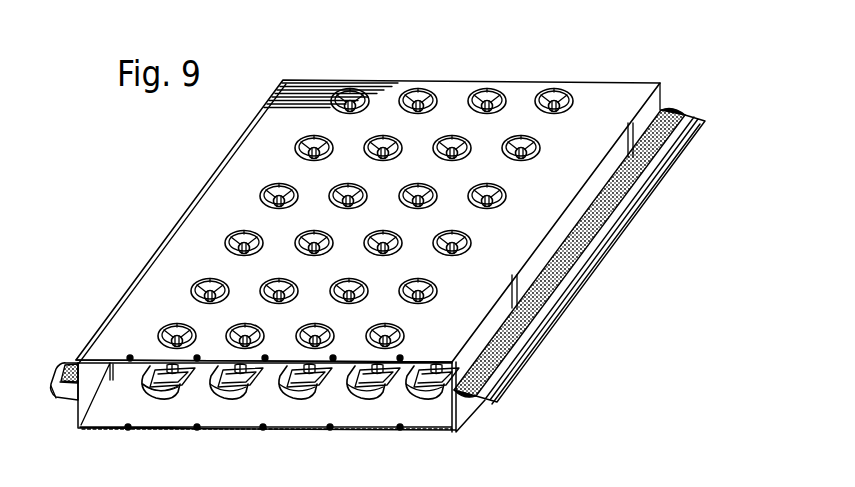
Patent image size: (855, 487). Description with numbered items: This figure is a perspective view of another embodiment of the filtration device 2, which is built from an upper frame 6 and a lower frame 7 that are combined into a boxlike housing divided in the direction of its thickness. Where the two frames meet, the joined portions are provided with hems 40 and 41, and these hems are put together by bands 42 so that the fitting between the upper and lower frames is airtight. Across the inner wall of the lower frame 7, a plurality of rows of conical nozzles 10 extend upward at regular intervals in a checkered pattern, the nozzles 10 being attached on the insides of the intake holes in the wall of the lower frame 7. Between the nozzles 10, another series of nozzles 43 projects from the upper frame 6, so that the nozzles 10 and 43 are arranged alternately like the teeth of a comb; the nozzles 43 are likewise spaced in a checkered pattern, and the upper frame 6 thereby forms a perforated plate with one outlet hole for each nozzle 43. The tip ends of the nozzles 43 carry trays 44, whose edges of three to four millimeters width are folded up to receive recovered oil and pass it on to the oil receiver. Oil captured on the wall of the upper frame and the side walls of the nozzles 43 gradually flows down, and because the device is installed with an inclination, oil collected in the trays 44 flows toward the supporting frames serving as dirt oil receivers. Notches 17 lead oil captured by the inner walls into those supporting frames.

The panel assembly 2 is at (482, 79).
The upper frame 6 is at (618, 81).
The lower frame 7 is at (418, 426).
The conical nozzle 10 is at (232, 392).
The notch 17 is at (130, 356).
The hem 40 is at (694, 116).
The hem 41 is at (692, 124).
The band 42 is at (671, 111).
The nozzle 43 is at (556, 93).
The tray 44 is at (192, 388).